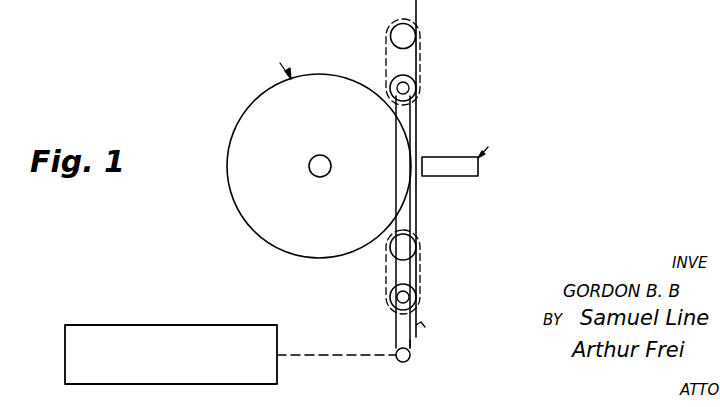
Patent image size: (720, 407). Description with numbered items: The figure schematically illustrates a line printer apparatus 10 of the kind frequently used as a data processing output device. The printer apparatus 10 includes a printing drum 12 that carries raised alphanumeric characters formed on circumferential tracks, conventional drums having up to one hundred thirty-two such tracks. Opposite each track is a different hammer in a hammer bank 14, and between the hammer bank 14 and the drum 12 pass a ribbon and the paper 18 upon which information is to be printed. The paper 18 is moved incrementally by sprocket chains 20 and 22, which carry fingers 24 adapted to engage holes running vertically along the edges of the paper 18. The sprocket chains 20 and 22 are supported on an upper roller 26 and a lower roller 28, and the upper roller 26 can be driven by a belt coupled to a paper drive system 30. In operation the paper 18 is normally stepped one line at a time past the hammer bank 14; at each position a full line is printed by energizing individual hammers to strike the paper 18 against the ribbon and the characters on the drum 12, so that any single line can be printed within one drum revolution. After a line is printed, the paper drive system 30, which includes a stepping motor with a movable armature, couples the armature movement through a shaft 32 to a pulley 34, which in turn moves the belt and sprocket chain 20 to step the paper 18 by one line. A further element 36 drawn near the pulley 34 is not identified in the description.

The printer 10 is at (453, 62).
The drum 12 is at (254, 104).
The hammer bank 14 is at (445, 157).
The paper 18 is at (417, 118).
The lower roller assembly 20 is at (431, 278).
The upper roller assembly 22 is at (379, 63).
The roller 24 is at (419, 258).
The roller 26 is at (391, 308).
The paper guide 28 is at (389, 250).
The paper drive system 30 is at (233, 325).
The drive connection 32 is at (297, 355).
The roller 34 is at (398, 360).
The paper path 36 is at (412, 345).